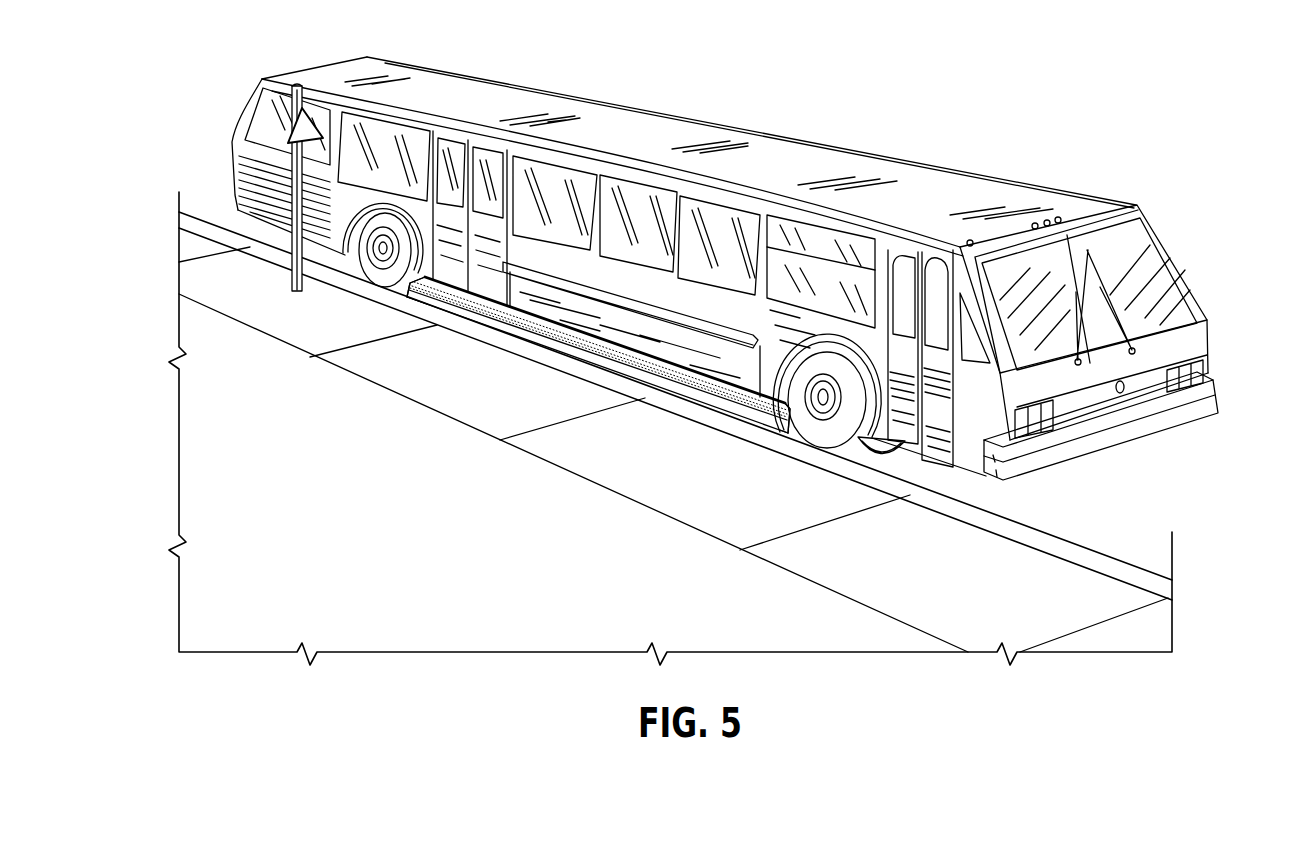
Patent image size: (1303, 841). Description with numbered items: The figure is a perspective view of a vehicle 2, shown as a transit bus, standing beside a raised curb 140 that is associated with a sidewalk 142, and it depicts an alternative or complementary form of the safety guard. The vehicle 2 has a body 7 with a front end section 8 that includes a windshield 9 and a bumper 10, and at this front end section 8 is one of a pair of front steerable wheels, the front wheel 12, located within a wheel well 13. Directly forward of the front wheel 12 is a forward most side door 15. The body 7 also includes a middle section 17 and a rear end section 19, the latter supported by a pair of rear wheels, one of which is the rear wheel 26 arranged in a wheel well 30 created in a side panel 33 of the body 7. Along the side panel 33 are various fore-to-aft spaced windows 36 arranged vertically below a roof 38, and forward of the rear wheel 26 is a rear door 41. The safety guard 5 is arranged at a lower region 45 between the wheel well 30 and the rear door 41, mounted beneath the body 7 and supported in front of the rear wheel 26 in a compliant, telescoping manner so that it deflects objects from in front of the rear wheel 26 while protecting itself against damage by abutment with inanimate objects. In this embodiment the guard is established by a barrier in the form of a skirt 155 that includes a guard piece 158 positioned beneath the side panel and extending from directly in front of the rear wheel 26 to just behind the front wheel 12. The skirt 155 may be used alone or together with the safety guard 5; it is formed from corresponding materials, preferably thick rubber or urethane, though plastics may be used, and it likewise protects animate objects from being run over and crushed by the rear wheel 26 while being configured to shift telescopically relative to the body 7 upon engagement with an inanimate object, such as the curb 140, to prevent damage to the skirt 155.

The vehicle 2 is at (750, 287).
The safety guard 5 is at (870, 460).
The body 7 is at (708, 120).
The front end section 8 is at (1176, 279).
The windshield 9 is at (1145, 246).
The bumper 10 is at (1220, 402).
The front steerable wheel 12 is at (818, 436).
The wheel well 13 is at (788, 408).
The forward most side door 15 is at (942, 437).
The middle section 17 is at (598, 374).
The rear end section 19 is at (270, 203).
The rear wheel 26 is at (387, 280).
The wheel well 30 is at (357, 264).
The side panel 33 is at (597, 332).
The windows 36 is at (622, 190).
The roof 38 is at (472, 84).
The rear door 41 is at (453, 262).
The lower region 45 is at (427, 276).
The raised curb 140 is at (1040, 534).
The sidewalk 142 is at (1047, 582).
The skirt 155 is at (651, 377).
The guard piece 158 is at (708, 390).